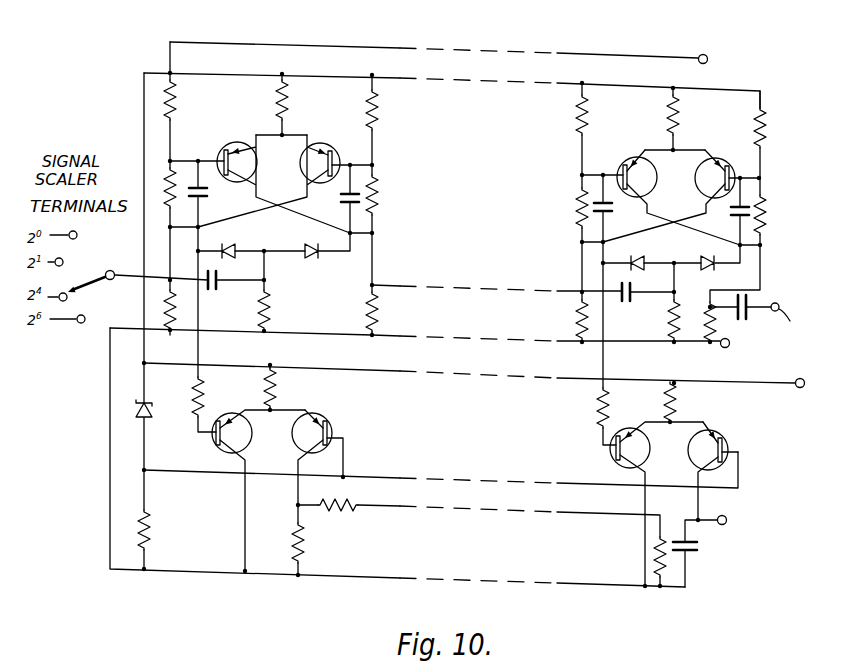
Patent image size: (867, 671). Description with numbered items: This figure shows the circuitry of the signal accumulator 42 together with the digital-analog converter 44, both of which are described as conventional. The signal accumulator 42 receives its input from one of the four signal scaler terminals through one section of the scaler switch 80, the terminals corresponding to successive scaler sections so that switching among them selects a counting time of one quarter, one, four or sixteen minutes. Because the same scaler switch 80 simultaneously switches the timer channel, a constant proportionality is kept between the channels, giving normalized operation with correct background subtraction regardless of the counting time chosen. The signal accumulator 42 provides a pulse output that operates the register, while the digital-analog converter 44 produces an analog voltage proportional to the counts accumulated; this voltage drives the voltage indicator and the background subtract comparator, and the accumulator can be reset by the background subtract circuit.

The signal accumulator 42 is at (465, 202).
The digital-analog converter 44 is at (461, 342).
The scaler switch 80 is at (93, 280).